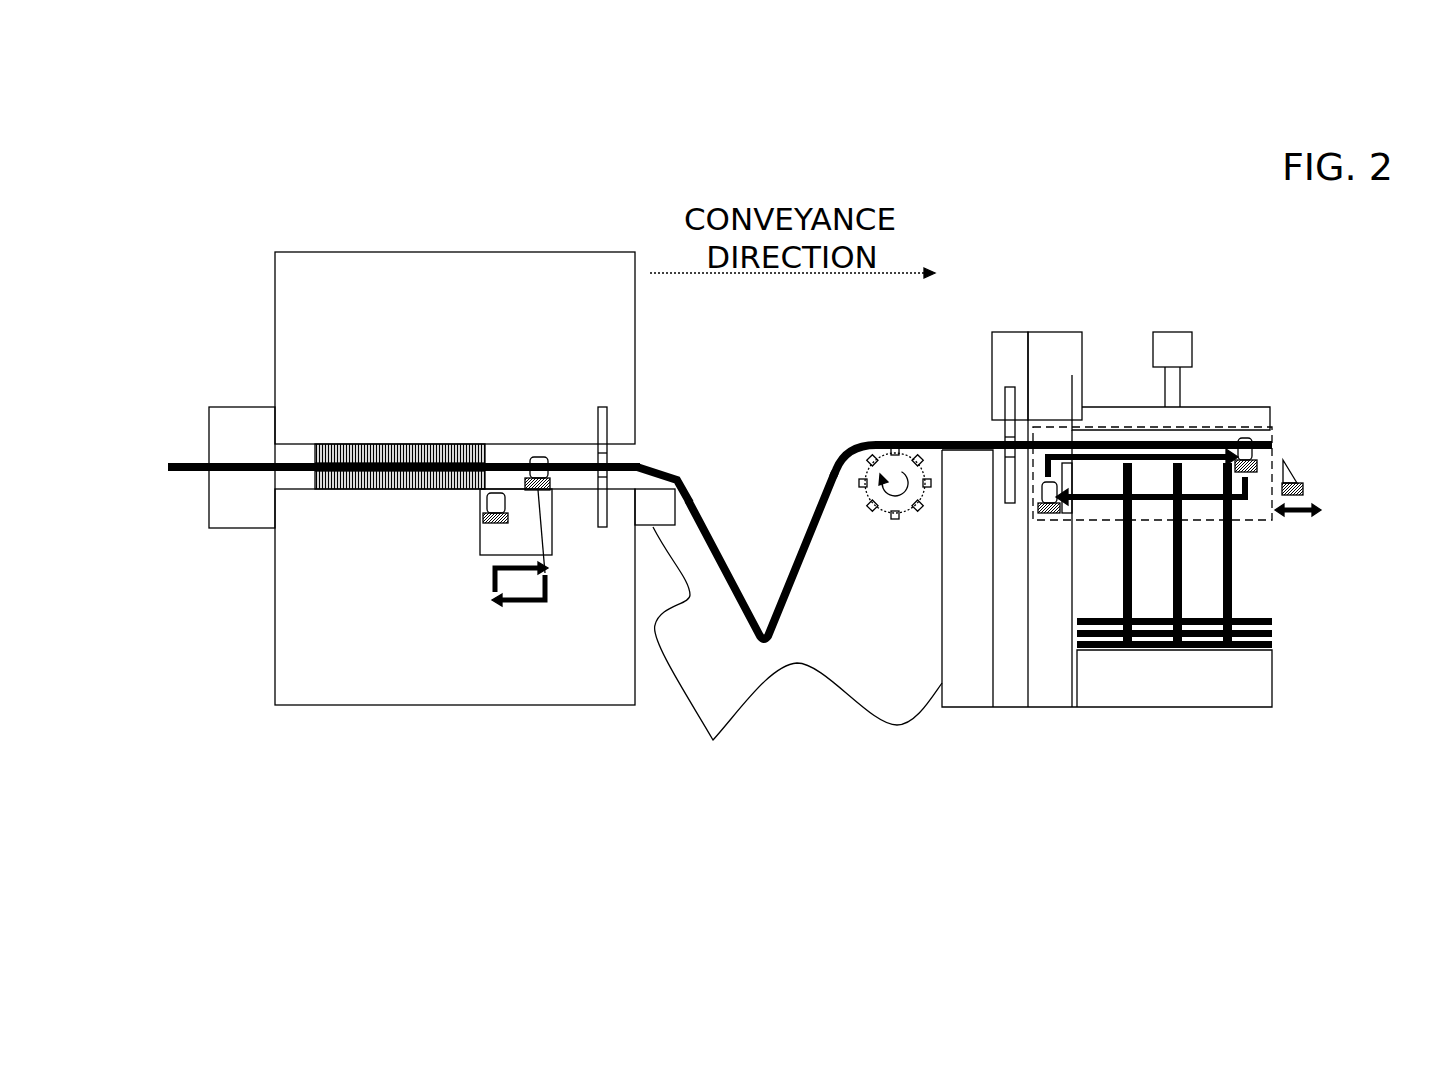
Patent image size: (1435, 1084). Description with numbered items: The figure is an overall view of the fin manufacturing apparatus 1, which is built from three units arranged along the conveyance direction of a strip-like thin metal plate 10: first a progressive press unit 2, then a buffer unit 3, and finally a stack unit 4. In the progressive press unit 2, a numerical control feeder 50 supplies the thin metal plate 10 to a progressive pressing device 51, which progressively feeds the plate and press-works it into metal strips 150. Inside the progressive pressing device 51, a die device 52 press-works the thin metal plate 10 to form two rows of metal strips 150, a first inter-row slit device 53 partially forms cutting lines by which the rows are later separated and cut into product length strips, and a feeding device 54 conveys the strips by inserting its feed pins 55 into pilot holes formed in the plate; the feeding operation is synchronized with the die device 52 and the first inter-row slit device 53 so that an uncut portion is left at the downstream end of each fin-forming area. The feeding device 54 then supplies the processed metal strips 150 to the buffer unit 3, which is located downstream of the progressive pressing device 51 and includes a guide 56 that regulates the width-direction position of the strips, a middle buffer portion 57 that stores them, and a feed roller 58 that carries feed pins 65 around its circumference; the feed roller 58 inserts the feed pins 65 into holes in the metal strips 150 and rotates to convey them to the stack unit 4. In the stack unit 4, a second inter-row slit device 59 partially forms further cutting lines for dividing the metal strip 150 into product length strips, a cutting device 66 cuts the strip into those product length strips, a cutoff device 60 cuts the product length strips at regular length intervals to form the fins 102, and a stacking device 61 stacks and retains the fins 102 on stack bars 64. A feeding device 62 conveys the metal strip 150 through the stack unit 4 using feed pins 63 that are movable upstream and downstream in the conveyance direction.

The fin manufacturing apparatus 1 is at (775, 166).
The progressive press unit 2 is at (483, 775).
The buffer unit 3 is at (768, 775).
The stack unit 4 is at (1108, 775).
The thin metal plate 10 is at (220, 463).
The numerical control (NC) feeder 50 is at (248, 412).
The progressive pressing device 51 is at (417, 273).
The die device 52 is at (403, 490).
The first inter-row slit device 53 is at (605, 407).
The feeding device 54 is at (480, 528).
The feed pins 55 is at (547, 570).
The guide 56 is at (713, 741).
The middle buffer portion 57 is at (758, 630).
The feed roller 58 is at (878, 447).
The second inter-row slit device 59 is at (1005, 357).
The cutoff device 60 is at (1058, 357).
The stacking device 61 is at (1182, 357).
The feeding device 62 is at (1272, 462).
The feed pins 63 is at (1270, 422).
The stack bars 64 is at (1230, 553).
The feed pins 65 is at (848, 463).
The cutting device 66 is at (1305, 490).
The fins 102 is at (1243, 437).
The metal strips 150 is at (650, 468).